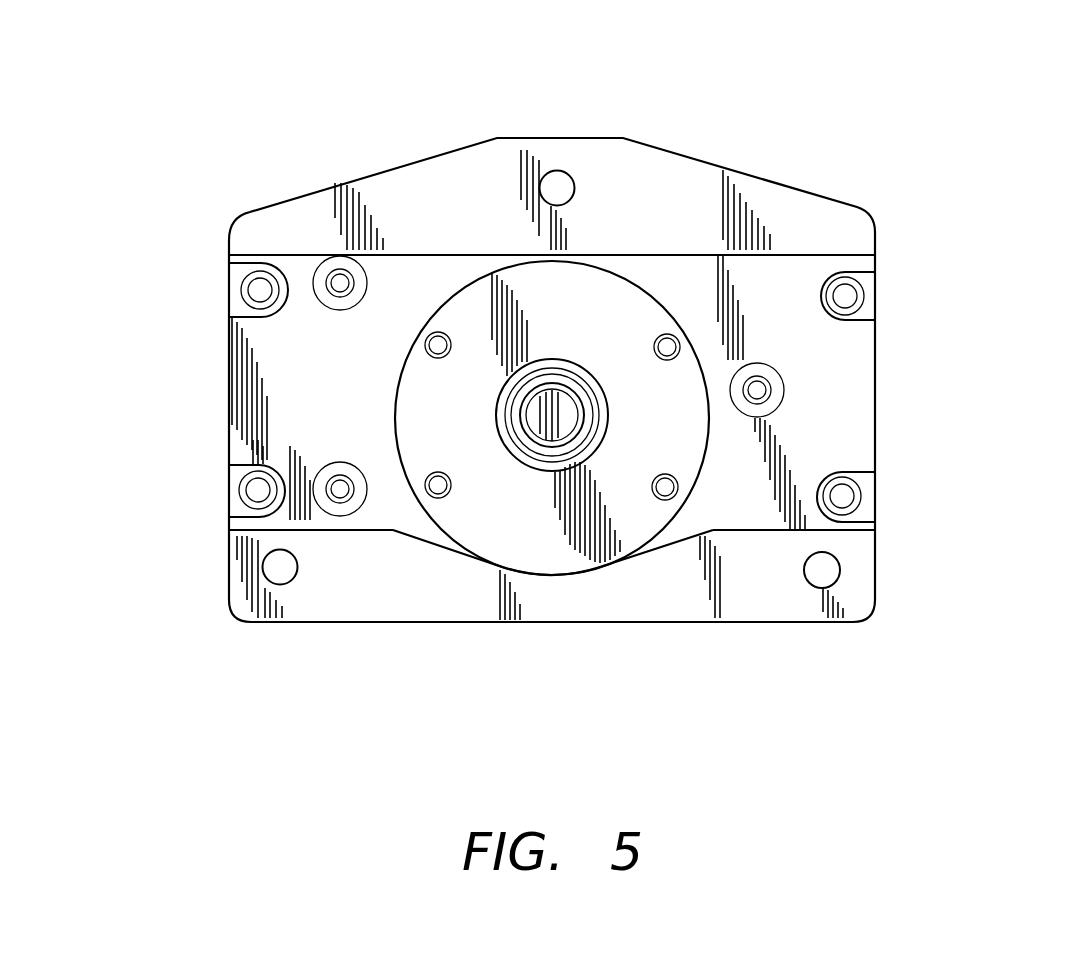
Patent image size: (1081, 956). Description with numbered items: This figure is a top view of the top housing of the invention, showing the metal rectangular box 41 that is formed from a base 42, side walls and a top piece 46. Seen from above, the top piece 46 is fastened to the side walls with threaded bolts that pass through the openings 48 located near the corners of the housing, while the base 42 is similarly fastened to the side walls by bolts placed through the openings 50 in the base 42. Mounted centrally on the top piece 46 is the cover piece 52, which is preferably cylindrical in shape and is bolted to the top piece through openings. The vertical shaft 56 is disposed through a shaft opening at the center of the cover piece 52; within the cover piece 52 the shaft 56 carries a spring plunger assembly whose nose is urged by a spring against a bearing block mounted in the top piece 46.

The rectangular box 41 is at (888, 328).
The base 42 is at (413, 590).
The top piece 46 is at (877, 438).
The openings 48 is at (212, 292).
The openings 50 is at (565, 170).
The cover piece 52 is at (433, 407).
The vertical shaft 56 is at (565, 405).